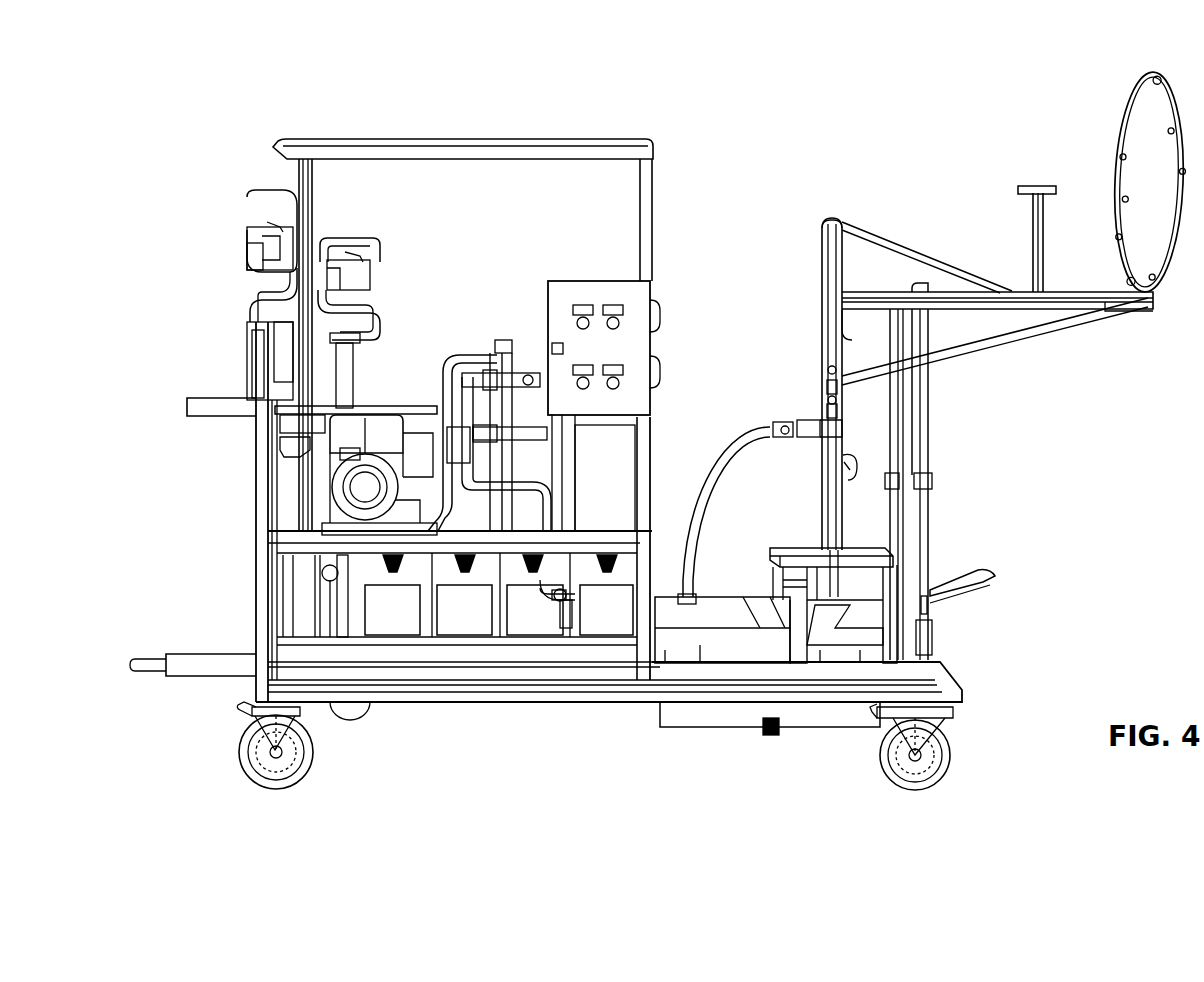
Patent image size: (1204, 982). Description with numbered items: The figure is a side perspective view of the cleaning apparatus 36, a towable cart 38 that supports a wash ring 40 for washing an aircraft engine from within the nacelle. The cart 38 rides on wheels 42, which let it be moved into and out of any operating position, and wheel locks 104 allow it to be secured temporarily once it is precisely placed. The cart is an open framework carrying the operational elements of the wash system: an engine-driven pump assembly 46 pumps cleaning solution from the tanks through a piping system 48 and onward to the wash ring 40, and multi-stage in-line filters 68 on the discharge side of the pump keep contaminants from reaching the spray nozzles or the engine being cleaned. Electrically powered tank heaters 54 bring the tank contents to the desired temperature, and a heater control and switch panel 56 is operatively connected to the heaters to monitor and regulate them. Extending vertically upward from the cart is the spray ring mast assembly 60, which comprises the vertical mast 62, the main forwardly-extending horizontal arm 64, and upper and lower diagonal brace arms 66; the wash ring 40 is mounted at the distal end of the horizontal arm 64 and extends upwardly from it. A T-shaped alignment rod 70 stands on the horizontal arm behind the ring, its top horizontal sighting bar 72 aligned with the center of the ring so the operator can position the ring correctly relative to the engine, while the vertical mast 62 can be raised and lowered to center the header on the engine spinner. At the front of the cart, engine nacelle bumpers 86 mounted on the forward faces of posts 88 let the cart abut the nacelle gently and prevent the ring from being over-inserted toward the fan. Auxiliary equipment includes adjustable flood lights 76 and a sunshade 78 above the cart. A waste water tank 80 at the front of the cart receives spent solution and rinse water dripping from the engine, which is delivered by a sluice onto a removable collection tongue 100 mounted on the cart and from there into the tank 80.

The cleaning apparatus 36 is at (739, 169).
The cart 38 is at (256, 522).
The wash ring 40 is at (1118, 126).
The wheels 42 is at (920, 762).
The pump assembly 46 is at (366, 483).
The piping system 48 is at (462, 357).
The tank heaters 54 is at (462, 612).
The heater control and switch panel 56 is at (623, 344).
The spray ring mast assembly 60 is at (829, 218).
The vertical mast 62 is at (822, 254).
The horizontal arm 64 is at (1068, 291).
The diagonal brace arms 66 is at (882, 243).
The multi-stage in-line filters 68 is at (820, 380).
The T-shaped alignment rod 70 is at (1032, 242).
The horizontal sighting bar 72 is at (1028, 185).
The adjustable flood lights 76 is at (245, 238).
The sunshade 78 is at (454, 152).
The waste water tank 80 is at (719, 620).
The engine nacelle bumpers 86 is at (930, 442).
The posts 88 is at (910, 522).
The collection tongue 100 is at (985, 573).
The wheel locks 104 is at (240, 716).